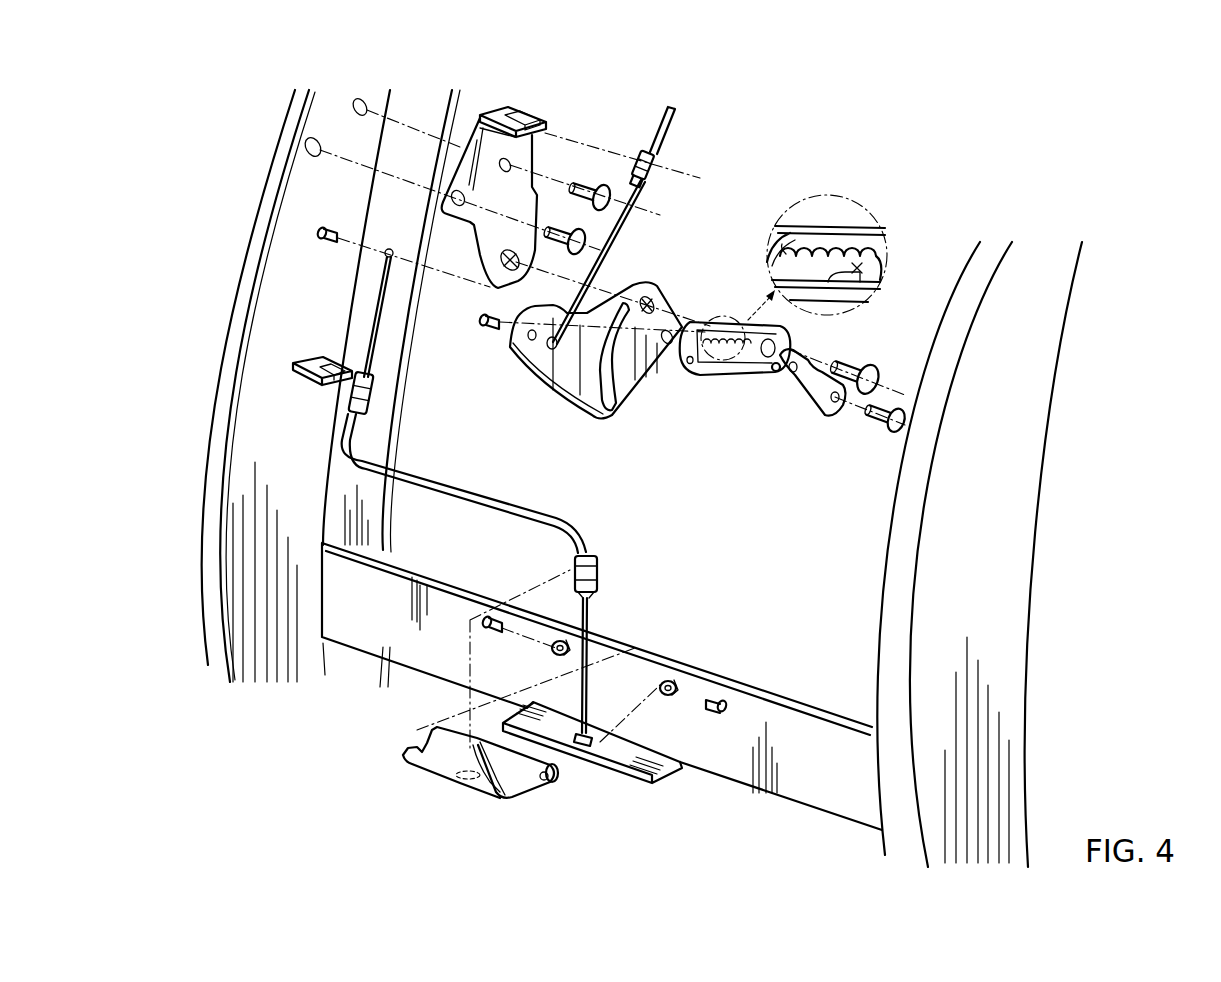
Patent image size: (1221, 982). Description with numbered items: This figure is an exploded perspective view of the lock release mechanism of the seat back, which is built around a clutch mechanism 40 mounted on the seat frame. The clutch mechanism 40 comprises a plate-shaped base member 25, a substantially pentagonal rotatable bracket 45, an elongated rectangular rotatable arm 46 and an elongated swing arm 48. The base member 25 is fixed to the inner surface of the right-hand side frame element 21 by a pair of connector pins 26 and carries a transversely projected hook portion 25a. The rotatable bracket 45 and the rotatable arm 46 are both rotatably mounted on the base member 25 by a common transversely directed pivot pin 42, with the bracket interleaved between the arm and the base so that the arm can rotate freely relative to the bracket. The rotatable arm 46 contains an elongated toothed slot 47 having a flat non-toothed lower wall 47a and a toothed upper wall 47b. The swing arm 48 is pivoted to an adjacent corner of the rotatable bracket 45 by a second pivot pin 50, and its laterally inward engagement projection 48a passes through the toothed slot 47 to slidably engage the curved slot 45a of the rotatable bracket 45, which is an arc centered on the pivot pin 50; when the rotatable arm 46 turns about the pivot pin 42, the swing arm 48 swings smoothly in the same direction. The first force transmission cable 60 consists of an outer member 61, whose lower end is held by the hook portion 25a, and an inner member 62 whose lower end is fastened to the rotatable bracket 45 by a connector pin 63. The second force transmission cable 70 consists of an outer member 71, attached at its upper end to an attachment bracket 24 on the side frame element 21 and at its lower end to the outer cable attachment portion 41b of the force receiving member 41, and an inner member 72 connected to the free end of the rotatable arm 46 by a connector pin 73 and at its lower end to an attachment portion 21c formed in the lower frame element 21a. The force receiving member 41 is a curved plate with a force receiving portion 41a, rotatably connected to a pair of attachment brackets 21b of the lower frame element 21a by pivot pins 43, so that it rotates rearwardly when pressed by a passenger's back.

The side frame element 21 is at (317, 177).
The lower frame element 21a is at (783, 730).
The attachment brackets 21b is at (556, 640).
The attachment portion 21c is at (593, 748).
The attachment bracket 24 is at (293, 363).
The base member 25 is at (472, 212).
The hook portion 25a is at (540, 118).
The connector pins 26 is at (608, 200).
The clutch mechanism 40 is at (822, 170).
The force receiving member 41 is at (382, 748).
The force receiving portion 41a is at (500, 790).
The outer cable attachment portion 41b is at (455, 777).
The pivot pin 42 is at (860, 366).
The pivot pins 43 is at (490, 618).
The rotatable bracket 45 is at (540, 360).
The curved slot 45a is at (600, 368).
The rotatable arm 46 is at (837, 227).
The toothed slot 47 is at (873, 260).
The non-toothed flattened longitudinal wall 47a is at (867, 283).
The toothed longitudinal wall 47b is at (803, 268).
The swing arm 48 is at (808, 397).
The engagement projection 48a is at (773, 377).
The pivot pin 50 is at (873, 425).
The first force transmission cable 60 is at (692, 143).
The outer member 61 is at (675, 138).
The inner member 62 is at (632, 195).
The connector pin 63 is at (478, 320).
The second force transmission cable 70 is at (418, 462).
The outer member 71 is at (440, 490).
The inner member 72 is at (377, 303).
The connector pin 73 is at (320, 232).